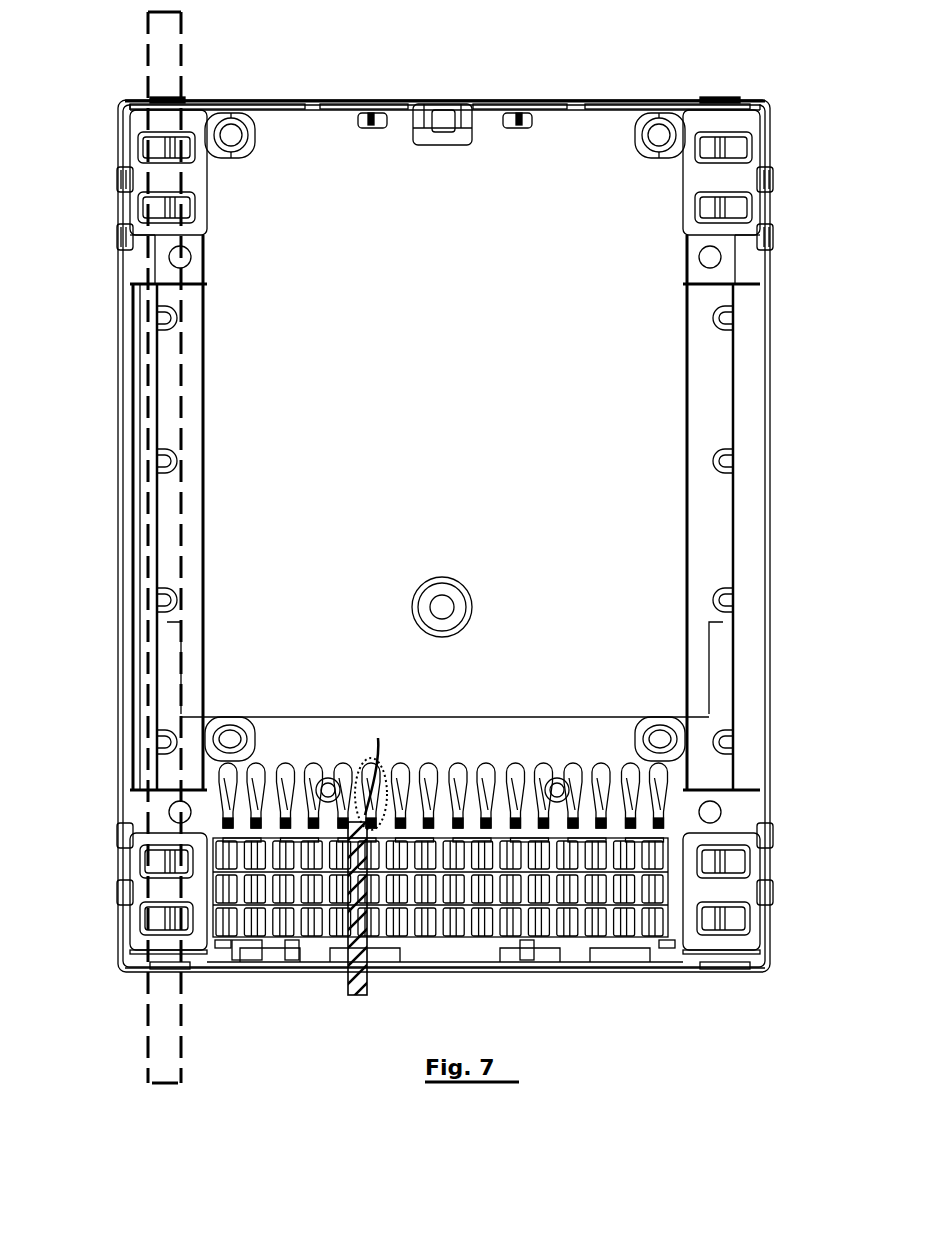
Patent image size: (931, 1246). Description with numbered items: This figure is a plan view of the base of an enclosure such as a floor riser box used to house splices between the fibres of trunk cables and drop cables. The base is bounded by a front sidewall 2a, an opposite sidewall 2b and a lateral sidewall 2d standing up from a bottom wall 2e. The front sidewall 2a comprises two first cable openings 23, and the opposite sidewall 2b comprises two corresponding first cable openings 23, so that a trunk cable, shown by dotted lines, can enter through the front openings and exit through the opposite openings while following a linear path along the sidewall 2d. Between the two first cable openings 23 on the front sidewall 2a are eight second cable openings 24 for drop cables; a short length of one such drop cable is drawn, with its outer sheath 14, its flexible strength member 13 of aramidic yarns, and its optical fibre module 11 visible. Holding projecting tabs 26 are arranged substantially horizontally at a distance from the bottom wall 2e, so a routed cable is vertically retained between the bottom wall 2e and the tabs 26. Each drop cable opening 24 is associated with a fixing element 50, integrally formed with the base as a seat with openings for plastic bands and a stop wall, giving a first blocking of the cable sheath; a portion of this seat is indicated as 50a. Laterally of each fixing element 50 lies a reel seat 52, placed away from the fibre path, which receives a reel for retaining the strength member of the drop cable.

The front sidewall 2a is at (614, 968).
The opposite sidewall 2b is at (275, 100).
The sidewall 2d is at (125, 360).
The bottom wall 2e is at (391, 406).
The optical fibre module 11 is at (378, 738).
The flexible strength member 13 is at (388, 763).
The outer sheath 14 is at (355, 985).
The first cable openings 23 is at (170, 100).
The second cable openings 24 is at (292, 965).
The projecting tabs 26 is at (170, 318).
The fixing elements 50 is at (650, 947).
The grid post 50a is at (527, 937).
The reel seats 52 is at (499, 786).